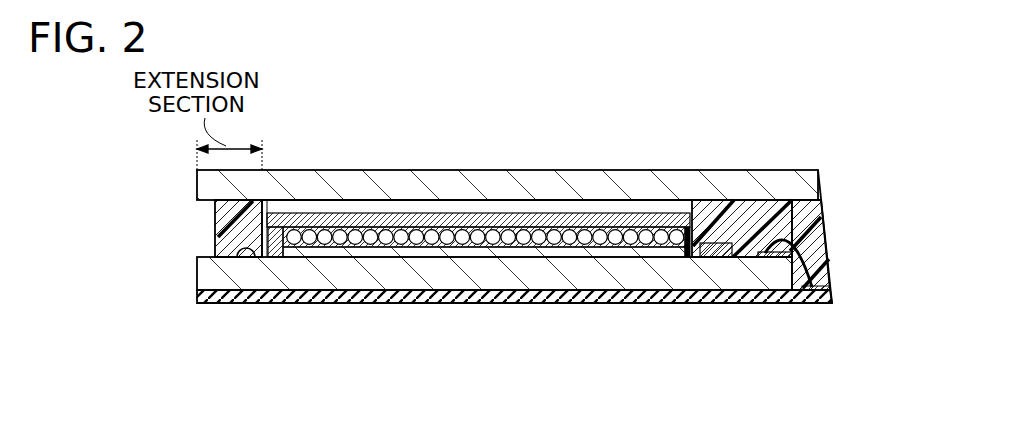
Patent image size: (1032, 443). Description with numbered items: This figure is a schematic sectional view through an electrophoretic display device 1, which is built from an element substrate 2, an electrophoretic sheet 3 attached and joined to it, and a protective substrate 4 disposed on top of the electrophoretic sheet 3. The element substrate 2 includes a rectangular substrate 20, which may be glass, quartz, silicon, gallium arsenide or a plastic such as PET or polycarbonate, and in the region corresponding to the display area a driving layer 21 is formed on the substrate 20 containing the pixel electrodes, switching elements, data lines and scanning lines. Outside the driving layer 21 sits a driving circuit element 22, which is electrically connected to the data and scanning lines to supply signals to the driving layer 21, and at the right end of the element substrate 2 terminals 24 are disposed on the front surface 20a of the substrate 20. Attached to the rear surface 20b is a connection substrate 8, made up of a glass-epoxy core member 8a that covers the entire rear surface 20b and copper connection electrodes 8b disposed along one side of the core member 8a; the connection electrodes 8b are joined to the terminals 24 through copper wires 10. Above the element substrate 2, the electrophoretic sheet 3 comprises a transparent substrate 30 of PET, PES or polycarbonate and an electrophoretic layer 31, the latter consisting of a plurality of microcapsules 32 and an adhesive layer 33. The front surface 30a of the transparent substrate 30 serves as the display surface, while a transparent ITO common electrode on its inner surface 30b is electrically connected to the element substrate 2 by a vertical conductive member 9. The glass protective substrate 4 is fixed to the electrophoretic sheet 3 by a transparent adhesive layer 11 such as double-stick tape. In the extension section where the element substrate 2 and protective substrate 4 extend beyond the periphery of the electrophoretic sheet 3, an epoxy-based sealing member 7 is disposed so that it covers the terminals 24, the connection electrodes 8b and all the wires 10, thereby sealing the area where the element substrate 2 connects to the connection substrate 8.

The electrophoretic display device 1 is at (845, 145).
The element substrate 2 is at (494, 329).
The electrophoretic sheet 3 is at (680, 412).
The protective substrate 4 is at (575, 182).
The sealing member 7 is at (218, 221).
The connection substrate 8 is at (565, 290).
The core member 8a is at (832, 297).
The connection electrodes 8b is at (830, 288).
The vertical conductive member 9 is at (276, 228).
The wires 10 is at (778, 252).
The transparent adhesive layer 11 is at (375, 193).
The substrate 20 is at (494, 309).
The front surface 20a is at (245, 252).
The rear surface 20b is at (325, 292).
The driving layer 21 is at (487, 252).
The driving circuit element 22 is at (708, 215).
The terminals 24 is at (722, 243).
The transparent substrate 30 is at (478, 258).
The front surface 30a is at (437, 220).
The inner surface 30b is at (500, 236).
The electrophoretic layer 31 is at (492, 321).
The microcapsules 32 is at (628, 254).
The adhesive layer 33 is at (688, 256).